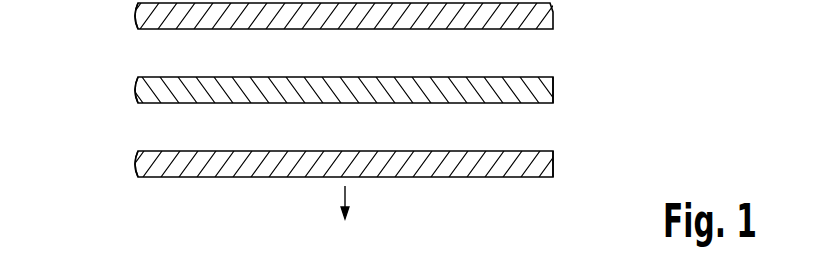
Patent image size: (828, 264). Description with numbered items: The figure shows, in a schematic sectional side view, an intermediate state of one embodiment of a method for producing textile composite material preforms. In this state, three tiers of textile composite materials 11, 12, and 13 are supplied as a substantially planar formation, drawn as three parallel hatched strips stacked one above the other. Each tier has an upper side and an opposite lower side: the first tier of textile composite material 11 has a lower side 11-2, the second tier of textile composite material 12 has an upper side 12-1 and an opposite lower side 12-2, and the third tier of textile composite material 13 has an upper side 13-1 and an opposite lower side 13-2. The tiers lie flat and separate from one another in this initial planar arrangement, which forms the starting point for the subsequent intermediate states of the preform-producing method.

The tier of textile composite material 11 is at (554, 11).
The lower side 11-2 is at (160, 43).
The tier of textile composite material 12 is at (554, 85).
The upper side 12-1 is at (531, 74).
The lower side 12-2 is at (160, 117).
The tier of textile composite material 13 is at (554, 160).
The upper side 13-1 is at (531, 149).
The lower side 13-2 is at (160, 191).